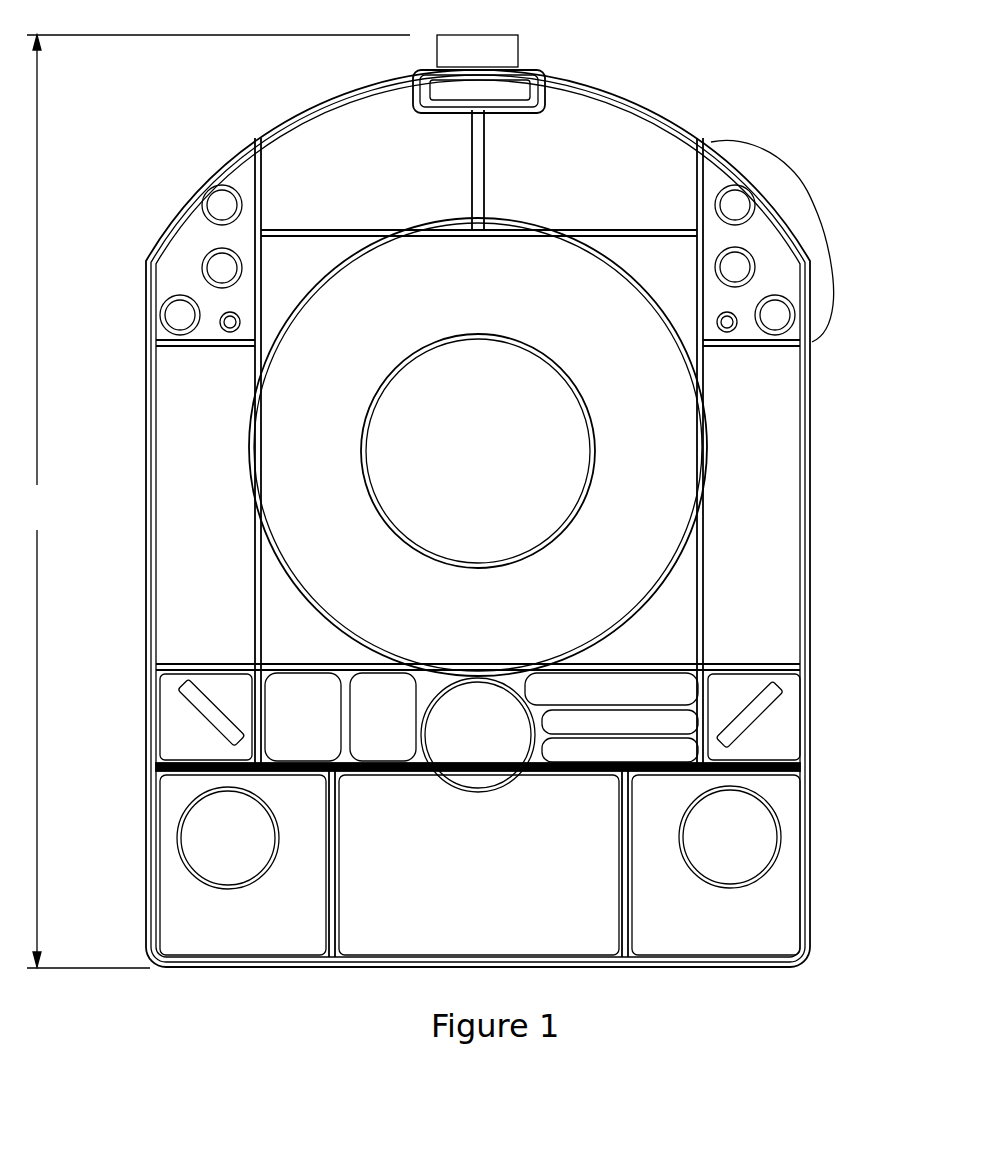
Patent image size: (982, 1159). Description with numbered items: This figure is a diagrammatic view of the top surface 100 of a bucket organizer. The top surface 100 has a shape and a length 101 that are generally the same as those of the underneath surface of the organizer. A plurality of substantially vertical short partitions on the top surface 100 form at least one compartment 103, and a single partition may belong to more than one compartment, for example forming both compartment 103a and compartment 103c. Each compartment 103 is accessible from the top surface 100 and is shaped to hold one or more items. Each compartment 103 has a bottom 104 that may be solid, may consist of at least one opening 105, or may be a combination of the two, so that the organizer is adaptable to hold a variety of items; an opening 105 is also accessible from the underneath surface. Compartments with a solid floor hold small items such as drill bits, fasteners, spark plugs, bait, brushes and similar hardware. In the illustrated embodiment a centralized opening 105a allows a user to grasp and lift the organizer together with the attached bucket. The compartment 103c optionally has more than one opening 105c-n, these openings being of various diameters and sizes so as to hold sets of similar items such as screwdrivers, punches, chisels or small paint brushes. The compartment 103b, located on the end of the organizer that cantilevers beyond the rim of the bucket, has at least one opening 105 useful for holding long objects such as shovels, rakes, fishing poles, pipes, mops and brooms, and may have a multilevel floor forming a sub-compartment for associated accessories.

The top surface 100 is at (816, 525).
The length 101 is at (214, 501).
The compartment 103 is at (580, 73).
The compartment 103a is at (285, 462).
The compartment 103b is at (652, 915).
The compartment 103c is at (814, 215).
The bottom 104 is at (360, 158).
The opening 105 is at (218, 838).
The centralized opening 105a is at (398, 476).
The openings 105c-n is at (173, 310).